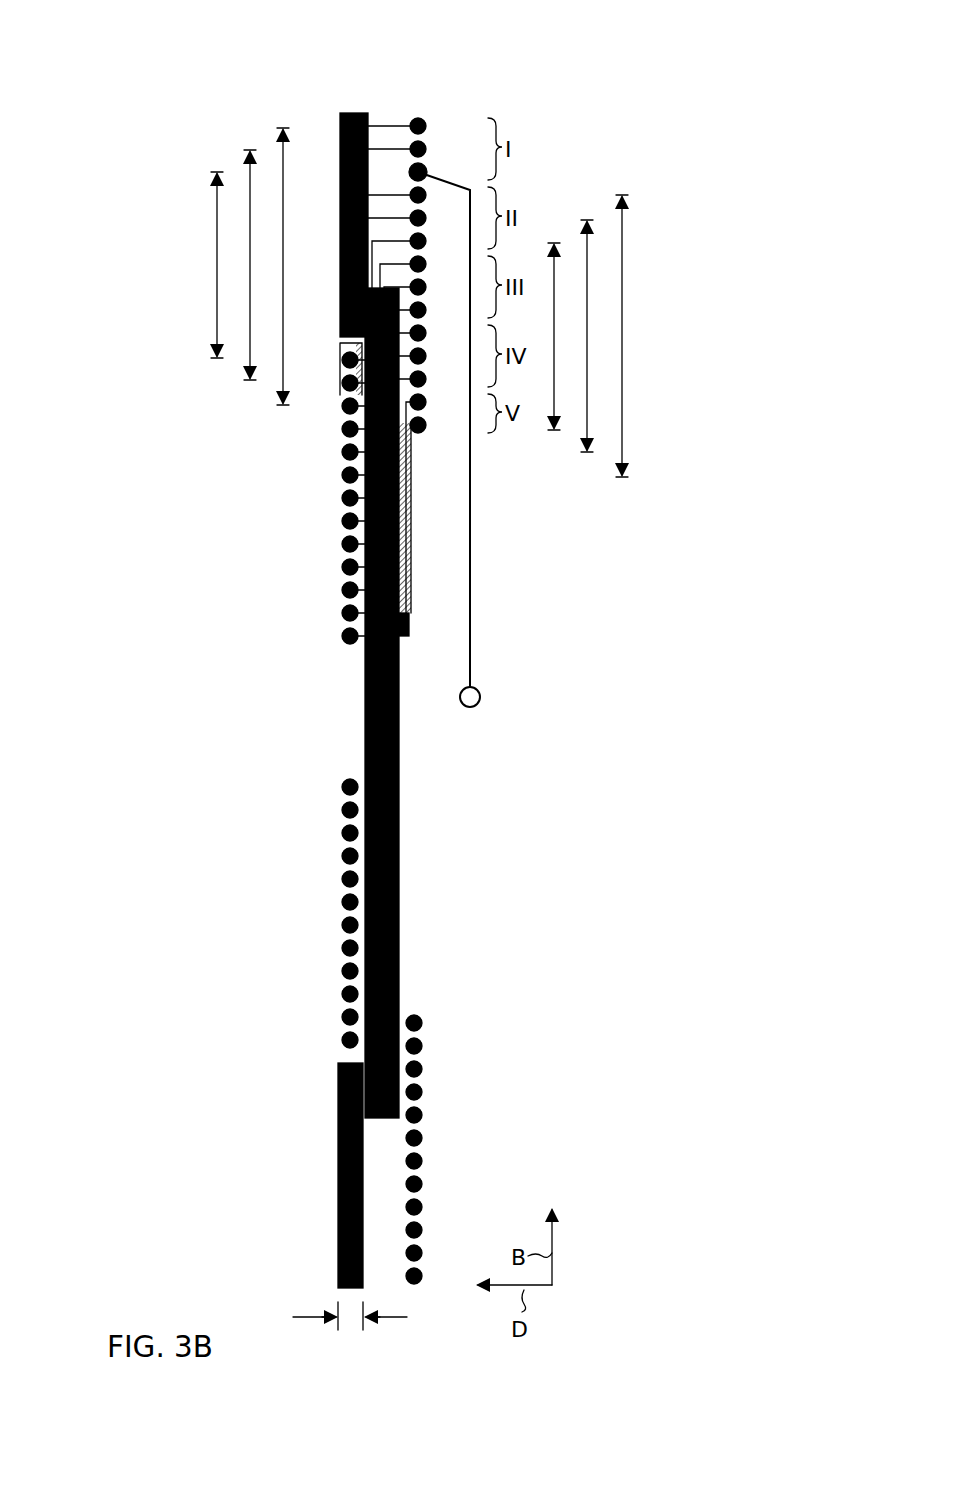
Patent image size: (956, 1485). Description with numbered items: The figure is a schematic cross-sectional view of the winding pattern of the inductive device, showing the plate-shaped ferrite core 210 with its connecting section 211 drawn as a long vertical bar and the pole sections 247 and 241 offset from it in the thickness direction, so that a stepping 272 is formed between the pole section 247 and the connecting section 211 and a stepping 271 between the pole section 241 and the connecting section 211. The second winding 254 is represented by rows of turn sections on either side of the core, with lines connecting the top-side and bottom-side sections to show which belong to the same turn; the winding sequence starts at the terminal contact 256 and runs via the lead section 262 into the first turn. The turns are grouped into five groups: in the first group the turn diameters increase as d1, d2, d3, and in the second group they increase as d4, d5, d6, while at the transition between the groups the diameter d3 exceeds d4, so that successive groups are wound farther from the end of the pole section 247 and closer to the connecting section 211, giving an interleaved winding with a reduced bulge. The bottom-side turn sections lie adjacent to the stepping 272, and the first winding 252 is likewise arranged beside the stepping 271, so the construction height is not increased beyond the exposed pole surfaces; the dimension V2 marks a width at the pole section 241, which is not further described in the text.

The pole section 247 is at (354, 112).
The second winding 254 is at (427, 327).
The stepping 272 is at (337, 342).
The lead section 262 is at (472, 520).
The terminal contact 256 is at (481, 697).
The connecting section 211 is at (399, 831).
The plate-shaped ferrite core 210 is at (449, 942).
The first winding 252 is at (324, 865).
The stepping 271 is at (341, 1056).
The pole section 241 is at (337, 1210).
The turn diameter d1 is at (217, 170).
The turn diameter d2 is at (250, 148).
The turn diameter d3 is at (283, 126).
The turn diameter d4 is at (554, 240).
The turn diameter d5 is at (587, 218).
The turn diameter d6 is at (622, 194).
The width V2 is at (350, 1322).